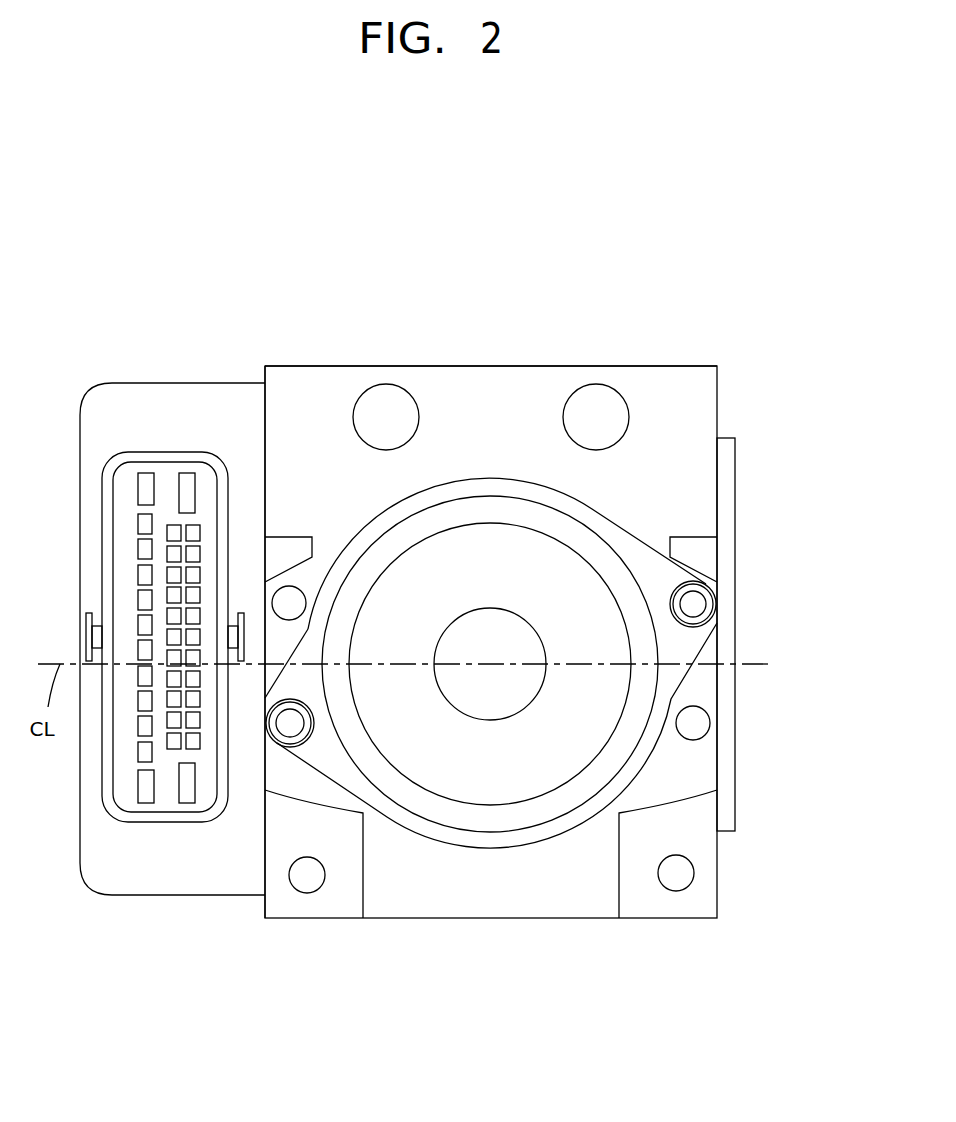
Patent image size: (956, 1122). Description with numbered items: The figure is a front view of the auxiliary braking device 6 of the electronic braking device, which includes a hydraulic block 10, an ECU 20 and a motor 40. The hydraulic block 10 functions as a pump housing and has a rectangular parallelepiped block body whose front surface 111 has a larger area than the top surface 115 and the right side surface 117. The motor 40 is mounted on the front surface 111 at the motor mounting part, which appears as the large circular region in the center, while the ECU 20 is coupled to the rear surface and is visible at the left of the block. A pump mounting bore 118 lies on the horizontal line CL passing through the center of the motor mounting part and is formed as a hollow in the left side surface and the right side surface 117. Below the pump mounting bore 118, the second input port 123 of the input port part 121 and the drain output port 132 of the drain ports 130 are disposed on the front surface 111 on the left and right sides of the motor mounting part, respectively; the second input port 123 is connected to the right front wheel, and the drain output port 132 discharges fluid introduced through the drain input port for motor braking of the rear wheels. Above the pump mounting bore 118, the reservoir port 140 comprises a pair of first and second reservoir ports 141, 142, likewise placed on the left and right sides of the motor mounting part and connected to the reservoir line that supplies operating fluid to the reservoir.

The auxiliary braking device 6 is at (687, 343).
The hydraulic block 10 is at (720, 412).
The ECU 20 is at (203, 400).
The motor 40 is at (580, 627).
The front surface 111 is at (688, 485).
The top surface 115 is at (318, 366).
The right side surface 117 is at (718, 753).
The pump mounting bore 118 is at (264, 825).
The input port part 121 is at (303, 931).
The second input port 123 is at (305, 880).
The drain ports 130 is at (704, 937).
The drain output port 132 is at (676, 878).
The reservoir port 140 is at (606, 262).
The first reservoir port 141 is at (396, 413).
The second reservoir port 142 is at (600, 413).